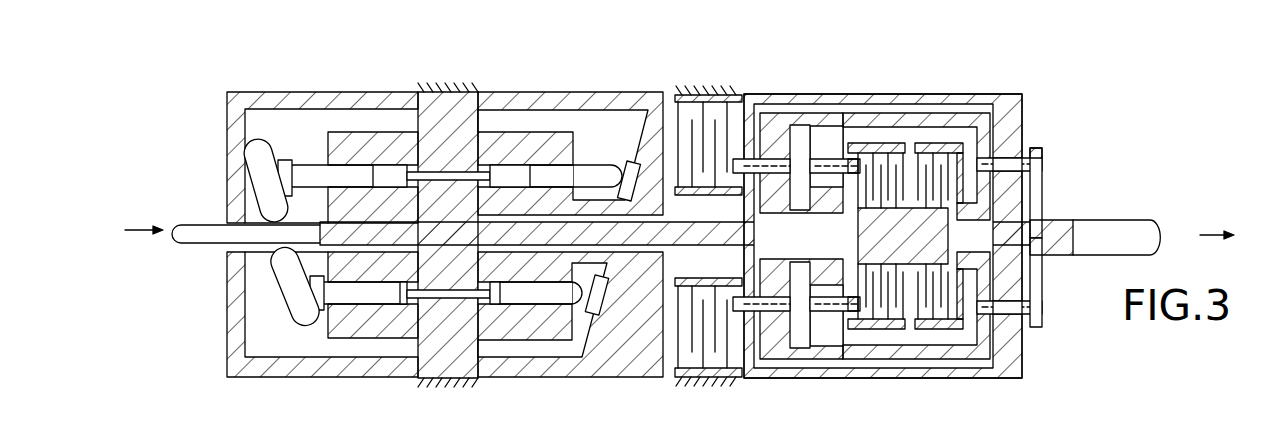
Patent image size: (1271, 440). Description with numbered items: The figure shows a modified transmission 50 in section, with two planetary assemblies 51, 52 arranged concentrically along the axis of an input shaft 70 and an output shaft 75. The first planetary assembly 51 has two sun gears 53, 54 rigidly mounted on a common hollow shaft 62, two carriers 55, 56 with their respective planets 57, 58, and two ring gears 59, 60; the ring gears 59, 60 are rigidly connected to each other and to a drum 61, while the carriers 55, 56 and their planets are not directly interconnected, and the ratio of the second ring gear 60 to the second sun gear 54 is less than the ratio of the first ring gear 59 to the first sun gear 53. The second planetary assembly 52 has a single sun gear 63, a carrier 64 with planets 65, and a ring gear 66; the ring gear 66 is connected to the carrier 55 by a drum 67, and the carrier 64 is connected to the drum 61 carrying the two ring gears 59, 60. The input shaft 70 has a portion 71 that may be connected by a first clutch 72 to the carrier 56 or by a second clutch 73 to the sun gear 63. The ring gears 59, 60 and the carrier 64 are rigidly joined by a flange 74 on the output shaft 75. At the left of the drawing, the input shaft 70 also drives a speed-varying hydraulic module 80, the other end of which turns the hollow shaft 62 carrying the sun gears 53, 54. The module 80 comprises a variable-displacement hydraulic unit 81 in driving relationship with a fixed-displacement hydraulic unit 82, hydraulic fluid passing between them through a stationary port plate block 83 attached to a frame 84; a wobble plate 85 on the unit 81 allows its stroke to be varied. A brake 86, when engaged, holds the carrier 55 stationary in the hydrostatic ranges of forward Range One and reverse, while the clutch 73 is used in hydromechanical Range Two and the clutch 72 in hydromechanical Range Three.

The transmission 50 is at (1026, 80).
The first planetary assembly 51 is at (802, 84).
The second planetary assembly 52 is at (1051, 119).
The first sun gear 53 is at (782, 267).
The second sun gear 54 is at (847, 300).
The carrier 55 is at (752, 136).
The carrier 56 is at (868, 145).
The planets 57 is at (777, 145).
The planets 58 is at (823, 147).
The first ring gear 59 is at (777, 350).
The second ring gear 60 is at (828, 345).
The drum 61 is at (918, 123).
The common shaft 62 is at (598, 203).
The sun gear 63 is at (1031, 305).
The carrier 64 is at (1044, 156).
The planets 65 is at (1010, 180).
The ring gear 66 is at (1012, 127).
The drum 67 is at (947, 102).
The input shaft 70 is at (199, 230).
The portion 71 is at (947, 233).
The first clutch 72 is at (890, 187).
The second clutch 73 is at (938, 188).
The flange 74 is at (1032, 212).
The output shaft 75 is at (1113, 232).
The speed-varying hydraulic module 80 is at (521, 118).
The variable-displacement hydraulic unit 81 is at (381, 163).
The fixed-displacement hydraulic unit 82 is at (541, 163).
The stationary port plate block 83 is at (461, 126).
The frame 84 is at (438, 84).
The wobble plate 85 is at (263, 158).
The brake 86 is at (687, 128).